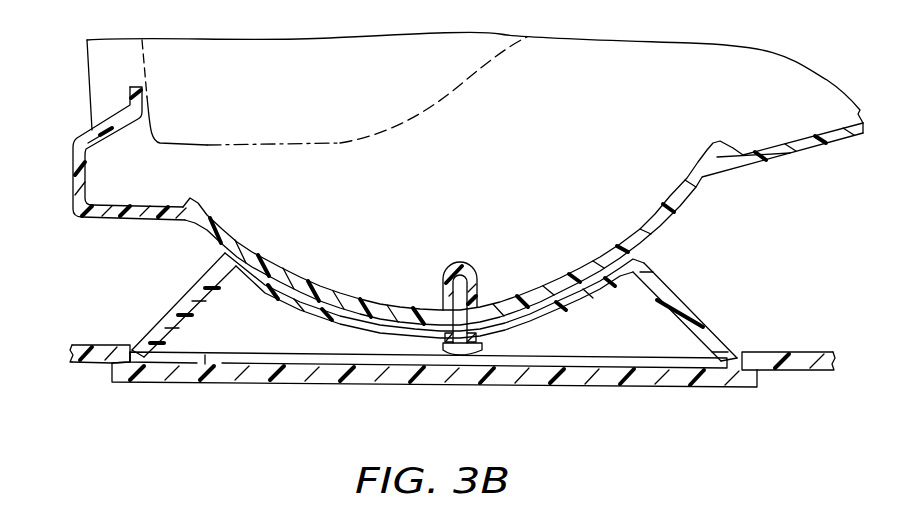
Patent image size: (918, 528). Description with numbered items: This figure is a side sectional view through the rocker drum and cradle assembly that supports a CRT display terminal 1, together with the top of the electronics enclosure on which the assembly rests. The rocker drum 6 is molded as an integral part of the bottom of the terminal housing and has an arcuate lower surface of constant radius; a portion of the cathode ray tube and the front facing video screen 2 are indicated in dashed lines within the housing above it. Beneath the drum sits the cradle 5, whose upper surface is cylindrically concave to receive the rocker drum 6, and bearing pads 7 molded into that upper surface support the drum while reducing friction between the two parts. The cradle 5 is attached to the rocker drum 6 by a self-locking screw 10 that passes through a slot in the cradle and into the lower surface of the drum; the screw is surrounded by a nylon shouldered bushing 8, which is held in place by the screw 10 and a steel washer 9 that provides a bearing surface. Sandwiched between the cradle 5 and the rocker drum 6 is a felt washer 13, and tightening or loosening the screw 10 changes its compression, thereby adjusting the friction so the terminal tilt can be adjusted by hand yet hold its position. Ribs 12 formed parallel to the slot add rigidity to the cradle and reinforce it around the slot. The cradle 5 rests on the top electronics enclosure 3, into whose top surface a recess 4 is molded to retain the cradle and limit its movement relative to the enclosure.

The CRT display terminal 1 is at (105, 220).
The video screen 2 is at (133, 62).
The top electronics enclosure 3 is at (90, 343).
The recess 4 is at (124, 347).
The cradle 5 is at (693, 312).
The rocker drum 6 is at (678, 205).
The bearing pads 7 is at (232, 254).
The shouldered bushing 8 is at (444, 341).
The steel washer 9 is at (482, 345).
The screw 10 is at (473, 355).
The ribs 12 is at (283, 351).
The felt washer 13 is at (510, 307).